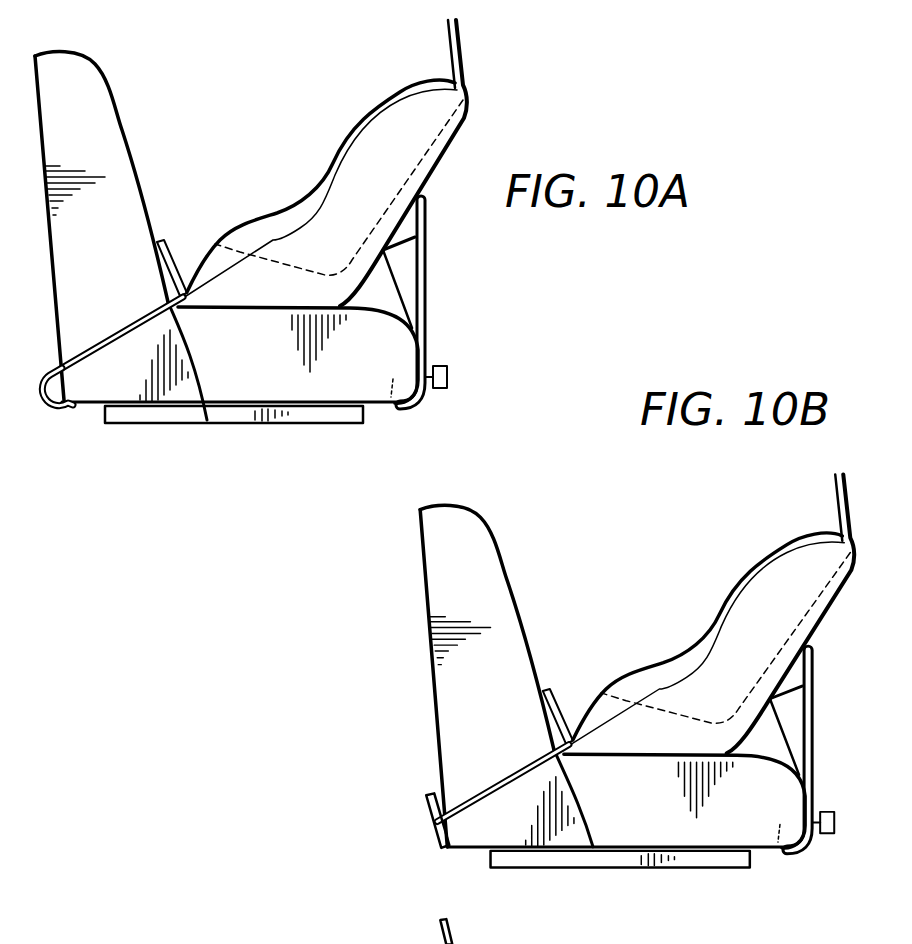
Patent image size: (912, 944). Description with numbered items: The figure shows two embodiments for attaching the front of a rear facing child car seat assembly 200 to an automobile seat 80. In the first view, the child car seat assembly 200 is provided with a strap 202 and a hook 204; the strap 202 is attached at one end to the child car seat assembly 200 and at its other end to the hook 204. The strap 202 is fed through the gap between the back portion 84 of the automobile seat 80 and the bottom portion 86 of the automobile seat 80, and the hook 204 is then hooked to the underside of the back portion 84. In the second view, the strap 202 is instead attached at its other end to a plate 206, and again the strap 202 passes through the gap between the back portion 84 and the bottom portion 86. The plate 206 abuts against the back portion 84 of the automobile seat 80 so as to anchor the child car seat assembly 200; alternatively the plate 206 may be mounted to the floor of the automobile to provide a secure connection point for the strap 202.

In FIG. 10A, the automobile seat 80 is at (100, 73).
In FIG. 10B, the automobile seat 80 is at (496, 674).
In FIG. 10A, the back portion 84 is at (95, 146).
In FIG. 10B, the back portion 84 is at (504, 611).
In FIG. 10A, the bottom portion 86 is at (323, 373).
In FIG. 10B, the bottom portion 86 is at (640, 833).
In FIG. 10A, the child car seat assembly 200 is at (383, 92).
In FIG. 10B, the child car seat assembly 200 is at (711, 662).
In FIG. 10A, the strap 202 is at (207, 420).
In FIG. 10B, the strap 202 is at (562, 830).
In FIG. 10A, the hook 204 is at (77, 413).
In FIG. 10B, the plate 206 is at (462, 844).